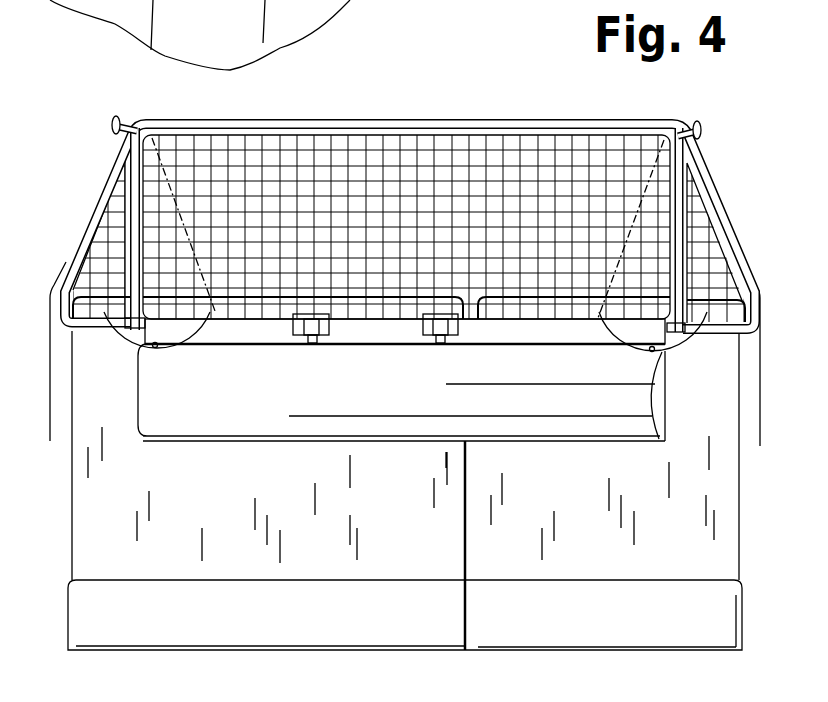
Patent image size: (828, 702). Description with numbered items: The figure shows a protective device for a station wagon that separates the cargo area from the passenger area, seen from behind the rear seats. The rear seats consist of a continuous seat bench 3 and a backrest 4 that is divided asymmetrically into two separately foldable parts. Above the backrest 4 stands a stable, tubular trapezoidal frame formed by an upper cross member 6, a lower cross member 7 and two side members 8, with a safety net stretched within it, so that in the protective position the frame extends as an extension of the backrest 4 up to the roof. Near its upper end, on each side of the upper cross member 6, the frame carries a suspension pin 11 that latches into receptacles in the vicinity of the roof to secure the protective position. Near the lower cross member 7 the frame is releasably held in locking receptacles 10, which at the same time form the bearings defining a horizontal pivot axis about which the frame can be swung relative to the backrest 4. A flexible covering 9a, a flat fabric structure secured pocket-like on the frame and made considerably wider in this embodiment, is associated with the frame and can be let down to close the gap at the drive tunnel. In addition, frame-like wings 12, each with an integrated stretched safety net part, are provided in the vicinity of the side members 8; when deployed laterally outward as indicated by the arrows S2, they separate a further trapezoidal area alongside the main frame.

The seat bench 3 is at (416, 624).
The backrest 4 is at (376, 0).
The upper cross member 6 is at (424, 128).
The lower cross member 7 is at (510, 332).
The side member 8 is at (138, 268).
The covering 9a is at (376, 412).
The locking receptacles 10 is at (315, 312).
The suspension pin 11 is at (111, 127).
The wings 12 is at (97, 262).
The arrows S2 is at (124, 341).